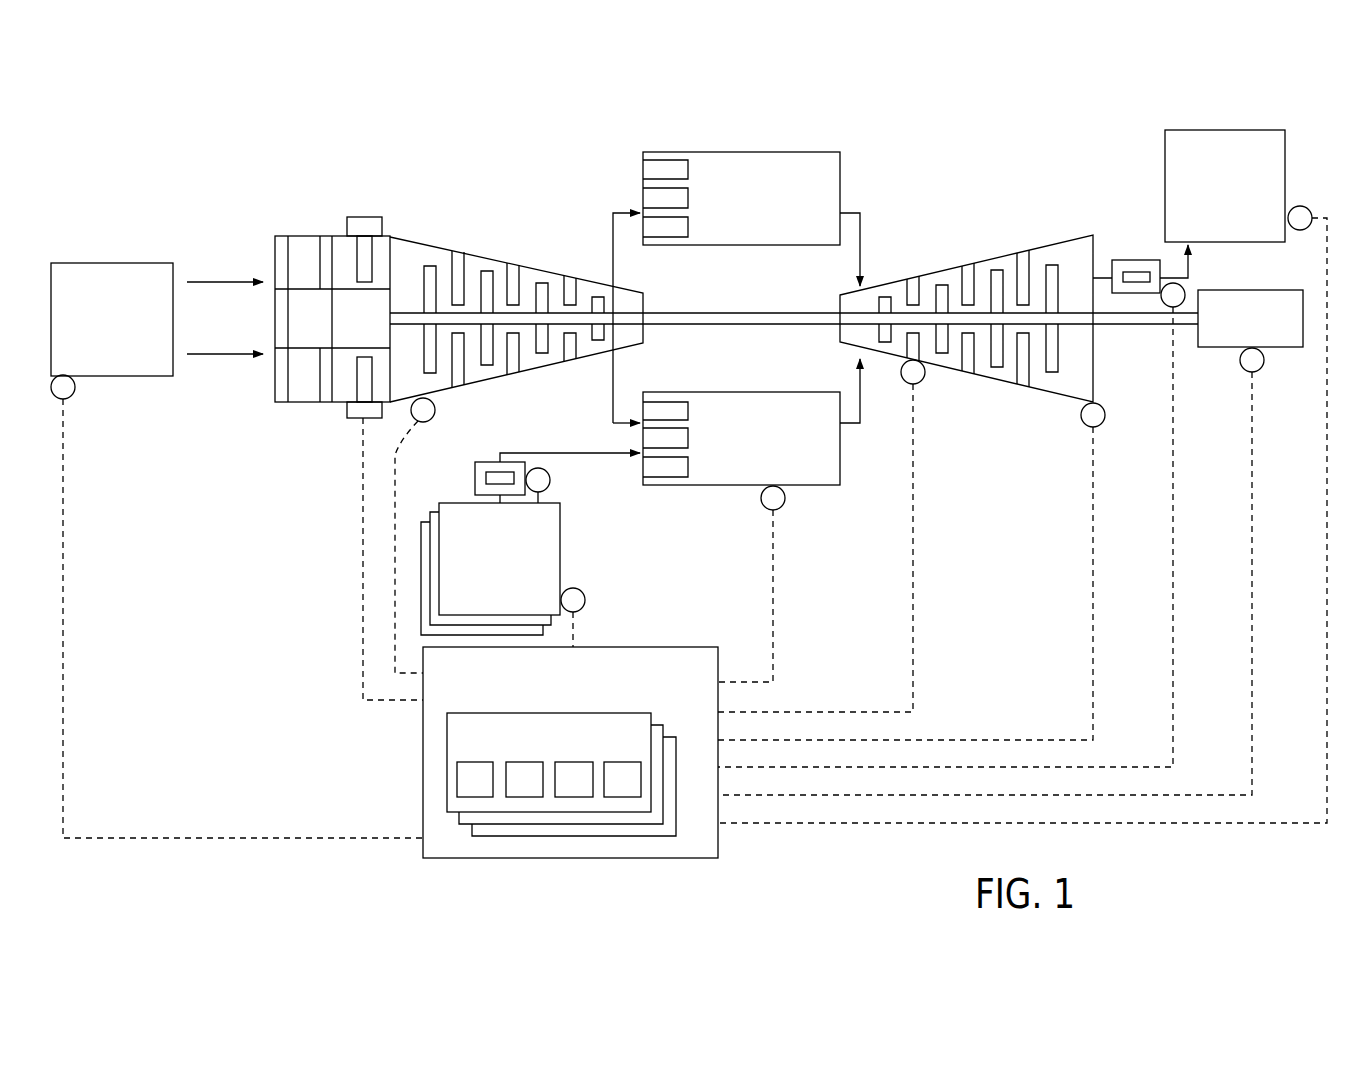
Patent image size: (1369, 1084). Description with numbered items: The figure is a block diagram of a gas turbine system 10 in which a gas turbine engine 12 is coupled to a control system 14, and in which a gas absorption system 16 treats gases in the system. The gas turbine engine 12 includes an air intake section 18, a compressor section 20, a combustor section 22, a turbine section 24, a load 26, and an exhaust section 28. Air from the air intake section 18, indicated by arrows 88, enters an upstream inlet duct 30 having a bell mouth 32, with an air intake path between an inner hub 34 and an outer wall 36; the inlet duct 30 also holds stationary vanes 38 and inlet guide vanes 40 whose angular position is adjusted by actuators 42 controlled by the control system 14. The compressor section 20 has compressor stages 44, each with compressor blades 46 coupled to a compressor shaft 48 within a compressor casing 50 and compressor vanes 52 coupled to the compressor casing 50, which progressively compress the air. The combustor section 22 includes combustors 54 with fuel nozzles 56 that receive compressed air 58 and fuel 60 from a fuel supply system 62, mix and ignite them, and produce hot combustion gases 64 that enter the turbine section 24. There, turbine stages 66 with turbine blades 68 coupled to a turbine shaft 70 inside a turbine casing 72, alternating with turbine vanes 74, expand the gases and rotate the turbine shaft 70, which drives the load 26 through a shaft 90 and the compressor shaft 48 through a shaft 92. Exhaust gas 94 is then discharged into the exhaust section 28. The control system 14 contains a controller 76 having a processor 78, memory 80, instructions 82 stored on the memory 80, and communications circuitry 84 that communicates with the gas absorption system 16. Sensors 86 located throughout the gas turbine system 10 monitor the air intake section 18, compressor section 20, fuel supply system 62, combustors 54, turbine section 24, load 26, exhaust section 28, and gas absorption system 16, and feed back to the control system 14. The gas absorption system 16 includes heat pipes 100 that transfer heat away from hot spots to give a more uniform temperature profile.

The gas turbine system 10 is at (1205, 112).
The gas turbine engine 12 is at (993, 155).
The control system 14 is at (695, 565).
The gas absorption system 16 is at (470, 481).
The air intake section 18 is at (110, 262).
The compressor section 20 is at (516, 291).
The combustor section 22 is at (728, 286).
The turbine section 24 is at (887, 305).
The load 26 is at (1283, 350).
The exhaust section 28 is at (1287, 152).
The inlet duct 30 is at (275, 402).
The bell mouth 32 is at (275, 240).
The inner hub 34 is at (275, 297).
The outer wall 36 is at (275, 243).
The stationary vanes 38 is at (305, 236).
The inlet guide vanes 40 is at (373, 258).
The actuators 42 is at (362, 217).
The compressor stages 44 is at (570, 374).
The compressor blades 46 is at (432, 374).
The compressor shaft 48 is at (625, 318).
The compressor casing 50 is at (450, 250).
The compressor vanes 52 is at (570, 283).
The combustors 54 is at (793, 152).
The fuel nozzles 56 is at (659, 150).
The compressed air 58 is at (610, 228).
The fuel 60 is at (612, 455).
The fuel supply systems 62 is at (562, 557).
The hot combustion gases 64 is at (868, 252).
The turbine stages 66 is at (968, 385).
The turbine blades 68 is at (997, 268).
The turbine shaft 70 is at (848, 320).
The turbine casing 72 is at (1050, 392).
The turbine vanes 74 is at (913, 282).
The controllers 76 is at (676, 812).
The processor 78 is at (475, 797).
The memory 80 is at (525, 797).
The instructions 82 is at (575, 797).
The communications circuitry 84 is at (622, 797).
The sensors 86 is at (75, 392).
The arrows 88 is at (208, 282).
The shaft 90 is at (1108, 325).
The shaft 92 is at (688, 318).
The exhaust gas 94 is at (1195, 266).
The heat pipes 100 is at (497, 473).